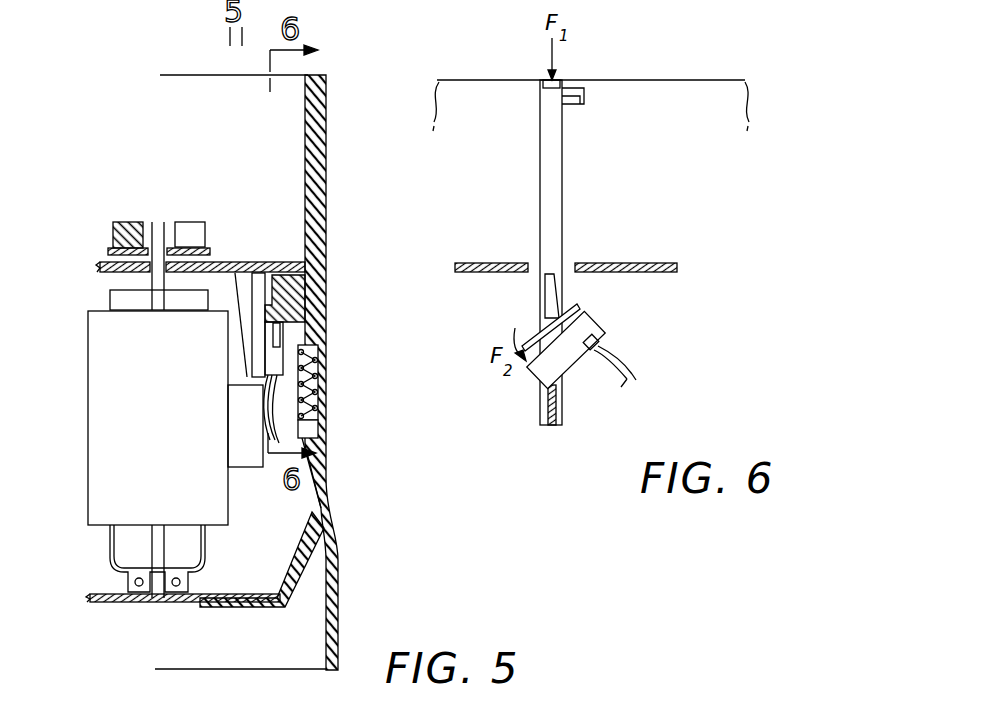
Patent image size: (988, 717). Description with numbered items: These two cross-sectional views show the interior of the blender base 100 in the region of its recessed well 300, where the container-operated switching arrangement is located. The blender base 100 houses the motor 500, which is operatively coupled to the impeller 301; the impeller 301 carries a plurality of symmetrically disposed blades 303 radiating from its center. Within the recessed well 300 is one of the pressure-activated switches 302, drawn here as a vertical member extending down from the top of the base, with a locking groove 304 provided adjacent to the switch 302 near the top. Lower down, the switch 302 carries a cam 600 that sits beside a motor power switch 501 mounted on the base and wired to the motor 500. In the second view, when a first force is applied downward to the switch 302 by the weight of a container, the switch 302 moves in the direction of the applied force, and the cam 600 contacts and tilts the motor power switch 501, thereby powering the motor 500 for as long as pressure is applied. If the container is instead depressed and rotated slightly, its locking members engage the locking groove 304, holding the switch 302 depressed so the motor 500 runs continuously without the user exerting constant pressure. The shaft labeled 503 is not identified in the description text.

In FIG. 5, the blender base 100 is at (326, 264).
In FIG. 5, the recessed well 300 is at (208, 151).
In FIG. 5, the impeller 301 is at (166, 216).
In FIG. 5, the pressure-activated switch 302 is at (305, 135).
In FIG. 6, the pressure-activated switch 302 is at (552, 170).
In FIG. 5, the blade 303 is at (126, 222).
In FIG. 6, the locking groove 304 is at (583, 100).
In FIG. 5, the motor 500 is at (110, 362).
In FIG. 5, the motor power switch 501 is at (272, 360).
In FIG. 6, the motor power switch 501 is at (567, 353).
In FIG. 5, the shaft 503 is at (160, 278).
In FIG. 6, the cam 600 is at (550, 297).